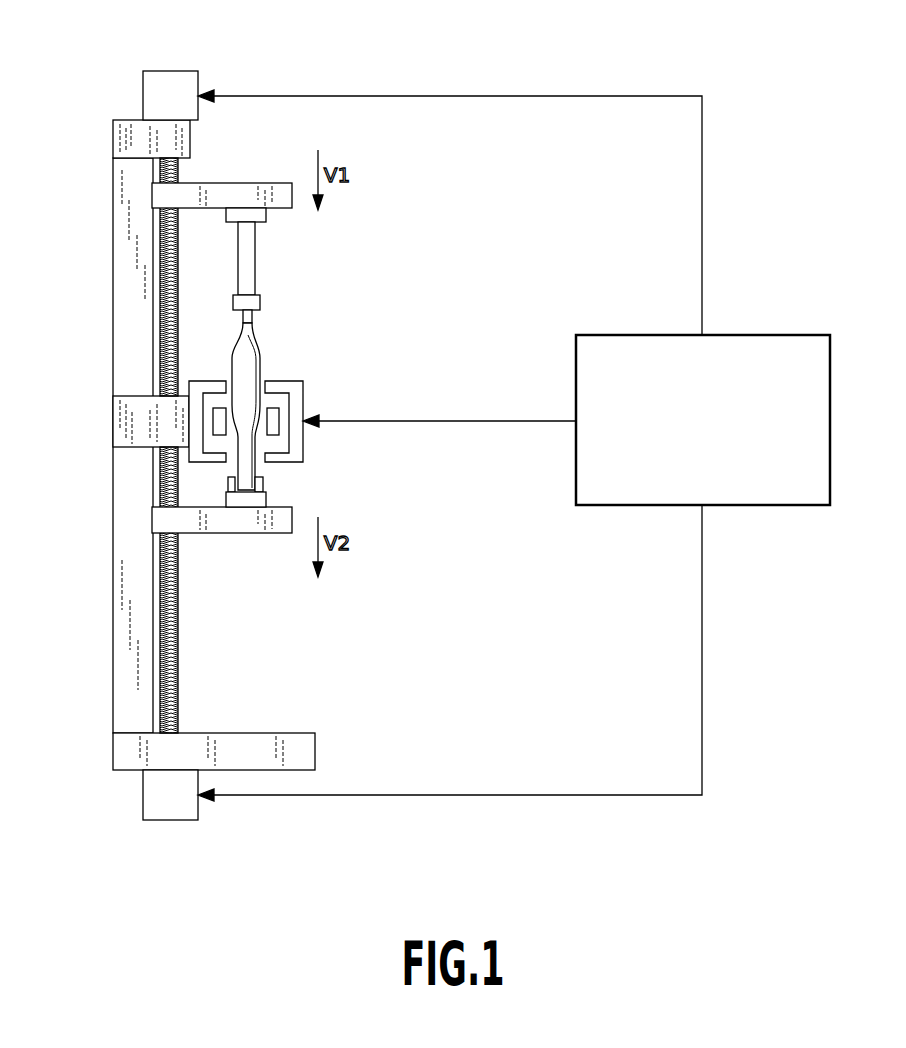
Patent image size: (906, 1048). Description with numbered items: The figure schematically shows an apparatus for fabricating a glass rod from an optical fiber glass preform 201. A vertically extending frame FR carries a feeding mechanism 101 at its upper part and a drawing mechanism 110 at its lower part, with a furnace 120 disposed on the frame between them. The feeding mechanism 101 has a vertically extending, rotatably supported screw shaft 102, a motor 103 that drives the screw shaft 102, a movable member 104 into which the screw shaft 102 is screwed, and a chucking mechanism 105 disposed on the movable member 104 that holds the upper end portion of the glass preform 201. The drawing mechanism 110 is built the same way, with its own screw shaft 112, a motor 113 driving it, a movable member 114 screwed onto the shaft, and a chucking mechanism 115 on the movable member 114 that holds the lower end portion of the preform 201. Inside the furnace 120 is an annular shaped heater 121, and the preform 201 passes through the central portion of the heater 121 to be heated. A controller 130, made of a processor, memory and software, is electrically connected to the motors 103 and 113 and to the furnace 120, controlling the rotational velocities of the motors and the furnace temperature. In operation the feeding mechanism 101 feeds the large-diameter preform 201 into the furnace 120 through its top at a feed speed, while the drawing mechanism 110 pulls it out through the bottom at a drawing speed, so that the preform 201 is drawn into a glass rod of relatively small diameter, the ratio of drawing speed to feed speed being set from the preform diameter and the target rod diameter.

The feeding mechanism 101 is at (217, 199).
The screw shaft 102 is at (163, 260).
The motor 103 is at (172, 70).
The movable member 104 is at (252, 192).
The chucking mechanism 105 is at (232, 222).
The drawing mechanism 110 is at (216, 668).
The screw shaft 112 is at (167, 643).
The motor 113 is at (168, 820).
The movable member 114 is at (250, 520).
The chucking mechanism 115 is at (264, 499).
The furnace 120 is at (287, 422).
The heater 121 is at (273, 425).
The controller 130 is at (779, 335).
The optical fiber glass preform 201 is at (257, 338).
The frame FR is at (123, 532).